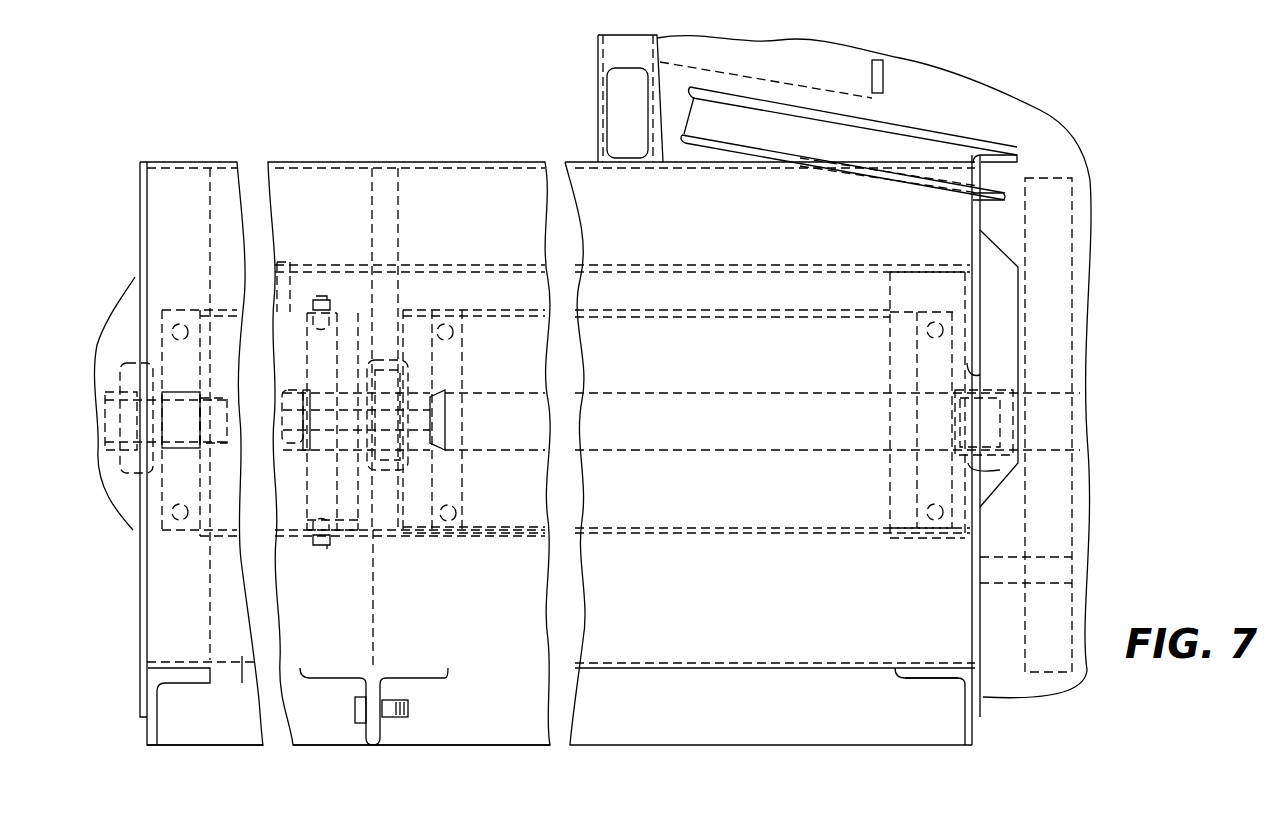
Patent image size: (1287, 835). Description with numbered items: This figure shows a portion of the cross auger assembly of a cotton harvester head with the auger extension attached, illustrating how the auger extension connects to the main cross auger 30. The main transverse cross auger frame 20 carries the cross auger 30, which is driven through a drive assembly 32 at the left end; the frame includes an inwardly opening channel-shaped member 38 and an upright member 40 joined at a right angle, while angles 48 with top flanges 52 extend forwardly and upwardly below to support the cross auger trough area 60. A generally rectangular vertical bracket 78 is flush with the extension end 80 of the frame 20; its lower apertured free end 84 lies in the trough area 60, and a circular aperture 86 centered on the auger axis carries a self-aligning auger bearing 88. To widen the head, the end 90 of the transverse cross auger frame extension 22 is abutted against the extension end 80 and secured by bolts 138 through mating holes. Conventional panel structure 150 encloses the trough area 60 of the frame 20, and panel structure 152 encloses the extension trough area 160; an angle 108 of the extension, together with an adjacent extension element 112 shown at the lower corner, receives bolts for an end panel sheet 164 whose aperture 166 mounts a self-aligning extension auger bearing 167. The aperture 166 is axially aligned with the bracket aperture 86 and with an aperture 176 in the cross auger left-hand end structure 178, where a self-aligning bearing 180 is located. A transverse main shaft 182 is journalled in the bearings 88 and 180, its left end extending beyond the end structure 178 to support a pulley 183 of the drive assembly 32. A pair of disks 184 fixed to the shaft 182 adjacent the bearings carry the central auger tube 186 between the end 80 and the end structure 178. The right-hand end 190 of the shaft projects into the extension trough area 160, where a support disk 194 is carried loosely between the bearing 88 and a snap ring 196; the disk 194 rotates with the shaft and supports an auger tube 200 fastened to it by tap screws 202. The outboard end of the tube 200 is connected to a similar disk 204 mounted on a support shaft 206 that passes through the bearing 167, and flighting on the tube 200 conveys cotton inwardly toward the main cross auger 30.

The transverse cross auger frame 20 is at (488, 138).
The transverse cross auger frame extension 22 is at (272, 150).
The cross auger 30 is at (724, 540).
The drive assembly 32 is at (1076, 132).
The channel-shaped member 38 is at (612, 75).
The upright member 40 is at (600, 48).
The angle 48 is at (380, 733).
The top flange 52 is at (930, 680).
The cross auger trough area 60 is at (748, 640).
The vertical bracket 78 is at (392, 222).
The extension end 80 is at (406, 156).
The lower apertured free end 84 is at (388, 522).
The circular aperture 86 is at (400, 340).
The self-aligning auger bearing 88 is at (400, 395).
The end of the extension 90 is at (358, 160).
The angle 108 is at (155, 733).
The step flange 112 is at (167, 683).
The bolt 138 is at (395, 700).
The panel structure 150 is at (823, 660).
The panel structure 152 is at (242, 668).
The extension trough area 160 is at (182, 598).
The end panel sheet 164 is at (140, 640).
The aperture 166 is at (137, 370).
The self-aligning extension auger bearing 167 is at (133, 393).
The aperture 176 is at (982, 372).
The cross auger left-hand end structure 178 is at (995, 671).
The self-aligning bearing 180 is at (993, 390).
The transverse main shaft 182 is at (737, 393).
The pulley 183 is at (1065, 505).
The disk 184 is at (462, 380).
The central auger tube 186 is at (657, 310).
The right-hand end of the shaft 190 is at (290, 400).
The support disk 194 is at (333, 490).
The snap ring 196 is at (303, 450).
The auger tube 200 is at (290, 262).
The tap screw 202 is at (320, 300).
The disk 204 is at (206, 310).
The support shaft 206 is at (218, 440).